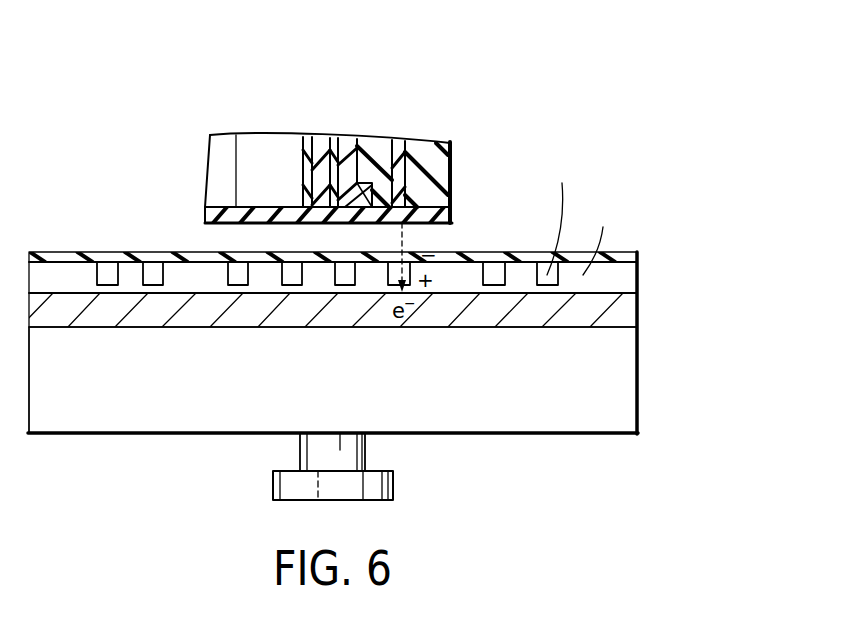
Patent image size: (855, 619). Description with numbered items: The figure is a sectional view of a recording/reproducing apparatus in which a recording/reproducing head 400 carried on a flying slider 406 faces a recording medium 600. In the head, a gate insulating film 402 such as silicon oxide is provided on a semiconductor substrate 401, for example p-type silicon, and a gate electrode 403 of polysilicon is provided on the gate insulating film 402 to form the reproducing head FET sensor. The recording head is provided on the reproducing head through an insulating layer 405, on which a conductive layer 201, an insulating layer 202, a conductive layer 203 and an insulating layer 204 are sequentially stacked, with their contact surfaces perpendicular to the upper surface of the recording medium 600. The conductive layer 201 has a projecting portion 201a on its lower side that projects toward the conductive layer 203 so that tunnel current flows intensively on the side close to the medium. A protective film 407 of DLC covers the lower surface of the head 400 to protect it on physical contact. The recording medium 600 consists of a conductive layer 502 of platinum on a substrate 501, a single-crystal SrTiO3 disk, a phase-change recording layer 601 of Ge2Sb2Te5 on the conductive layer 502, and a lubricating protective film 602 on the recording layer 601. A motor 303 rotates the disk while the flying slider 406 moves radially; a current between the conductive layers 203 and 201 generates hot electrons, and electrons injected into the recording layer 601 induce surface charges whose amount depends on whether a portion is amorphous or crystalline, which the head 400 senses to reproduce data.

The recording/reproducing head 400 is at (458, 160).
The flying slider 406 is at (221, 135).
The semiconductor substrate 401 is at (259, 135).
The gate insulating film 402 is at (306, 138).
The gate electrode 403 is at (326, 140).
The insulating layer 405 is at (336, 140).
The conductive layer 201 is at (352, 140).
The projecting portion 201a is at (372, 192).
The insulating layer 202 is at (374, 140).
The conductive layer 203 is at (404, 140).
The insulating layer 204 is at (431, 143).
The protective film 407 is at (218, 218).
The recording medium 600 is at (591, 440).
The protective film 602 is at (637, 256).
The recording layer 601 is at (630, 282).
The conductive layer 502 is at (630, 312).
The substrate 501 is at (628, 376).
The motor 303 is at (290, 483).